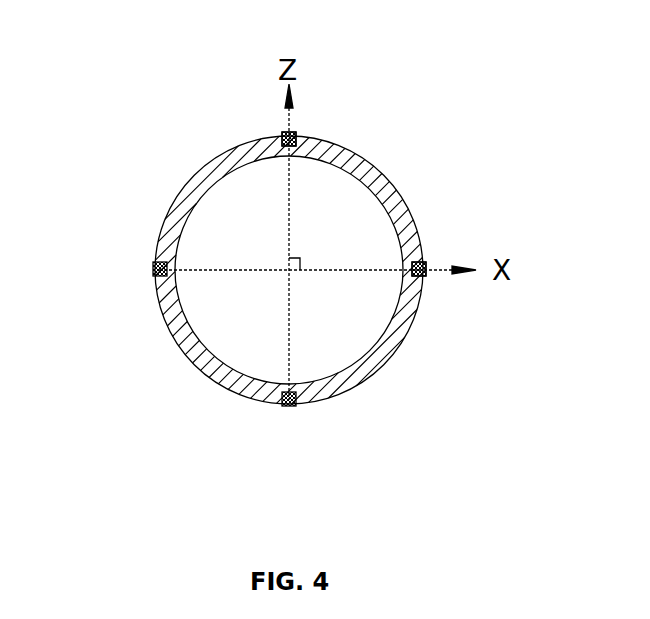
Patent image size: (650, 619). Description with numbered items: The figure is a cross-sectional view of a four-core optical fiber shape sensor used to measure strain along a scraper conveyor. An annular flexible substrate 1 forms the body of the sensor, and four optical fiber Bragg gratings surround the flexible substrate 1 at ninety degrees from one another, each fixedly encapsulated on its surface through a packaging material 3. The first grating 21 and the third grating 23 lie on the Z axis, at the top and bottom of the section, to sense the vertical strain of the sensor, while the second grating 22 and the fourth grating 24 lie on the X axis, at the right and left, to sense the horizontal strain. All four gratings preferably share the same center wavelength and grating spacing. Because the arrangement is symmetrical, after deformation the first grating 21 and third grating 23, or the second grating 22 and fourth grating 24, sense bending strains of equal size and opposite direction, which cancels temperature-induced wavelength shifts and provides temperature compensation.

The flexible substrate 1 is at (346, 145).
The packaging material 3 is at (284, 134).
The first grating 21 is at (298, 134).
The second grating 22 is at (427, 264).
The third grating 23 is at (290, 407).
The fourth grating 24 is at (152, 269).